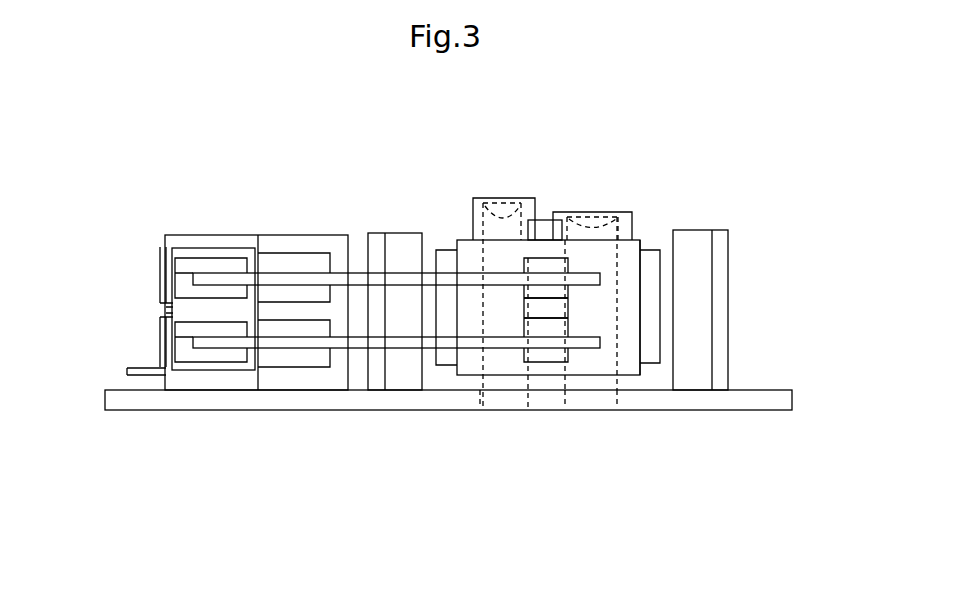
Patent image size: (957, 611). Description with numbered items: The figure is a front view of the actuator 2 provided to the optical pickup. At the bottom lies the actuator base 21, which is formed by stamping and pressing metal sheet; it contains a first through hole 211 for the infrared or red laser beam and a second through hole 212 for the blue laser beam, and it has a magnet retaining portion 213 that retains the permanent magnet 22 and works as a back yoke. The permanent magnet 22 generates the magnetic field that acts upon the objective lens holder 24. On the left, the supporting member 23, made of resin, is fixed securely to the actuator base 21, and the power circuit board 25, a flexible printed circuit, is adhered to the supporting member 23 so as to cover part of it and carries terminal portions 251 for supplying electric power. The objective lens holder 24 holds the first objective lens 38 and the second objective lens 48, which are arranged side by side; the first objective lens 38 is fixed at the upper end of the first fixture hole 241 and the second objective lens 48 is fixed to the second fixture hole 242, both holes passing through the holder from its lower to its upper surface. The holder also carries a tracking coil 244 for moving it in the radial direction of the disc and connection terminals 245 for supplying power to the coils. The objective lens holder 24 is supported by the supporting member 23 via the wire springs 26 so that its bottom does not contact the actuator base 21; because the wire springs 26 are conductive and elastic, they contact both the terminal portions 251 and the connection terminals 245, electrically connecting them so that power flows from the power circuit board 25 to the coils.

The actuator 2 is at (103, 187).
The actuator base 21 is at (183, 398).
The first through hole 211 is at (578, 402).
The second through hole 212 is at (492, 400).
The magnet retaining portion 213 is at (378, 373).
The permanent magnet 22 is at (397, 238).
The supporting member 23 is at (205, 247).
The objective lens holder 24 is at (632, 248).
The first fixture hole 241 is at (618, 263).
The second fixture hole 242 is at (473, 198).
The tracking coil 244 is at (447, 320).
The connection terminals 245 is at (557, 295).
The power circuit board 25 is at (168, 343).
The terminal portions 251 is at (218, 327).
The wire springs 26 is at (402, 342).
The first objective lens 38 is at (605, 217).
The second objective lens 48 is at (507, 207).